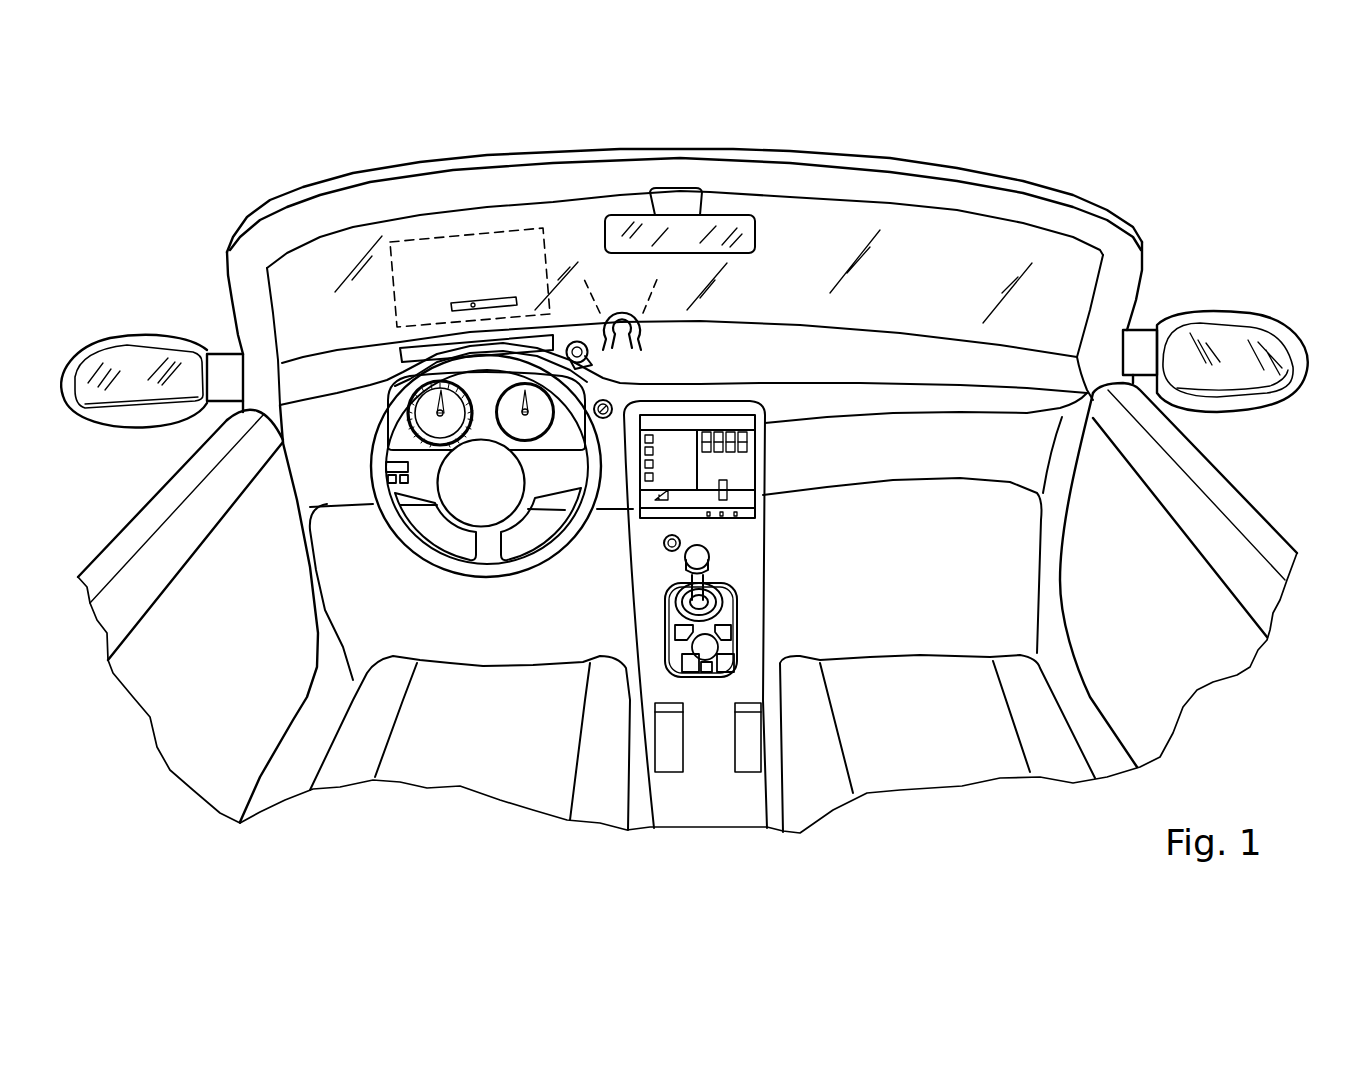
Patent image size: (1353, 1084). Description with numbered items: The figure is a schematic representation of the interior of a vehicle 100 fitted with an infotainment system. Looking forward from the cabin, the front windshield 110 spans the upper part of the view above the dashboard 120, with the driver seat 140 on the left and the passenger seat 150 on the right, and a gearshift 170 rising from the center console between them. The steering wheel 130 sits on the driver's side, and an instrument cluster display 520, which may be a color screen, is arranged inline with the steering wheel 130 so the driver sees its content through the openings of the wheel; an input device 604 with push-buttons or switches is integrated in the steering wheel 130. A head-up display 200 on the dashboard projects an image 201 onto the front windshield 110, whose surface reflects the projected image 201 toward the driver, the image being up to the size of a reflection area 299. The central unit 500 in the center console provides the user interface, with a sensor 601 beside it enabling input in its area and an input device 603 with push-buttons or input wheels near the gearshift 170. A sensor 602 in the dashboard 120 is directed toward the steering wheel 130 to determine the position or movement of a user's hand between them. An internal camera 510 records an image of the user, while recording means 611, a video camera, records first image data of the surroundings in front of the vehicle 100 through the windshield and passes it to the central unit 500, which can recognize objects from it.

The vehicle 100 is at (963, 820).
The front windshield 110 is at (950, 233).
The dashboard 120 is at (370, 392).
The steering wheel 130 is at (490, 567).
The driver seat 140 is at (515, 724).
The passenger seat 150 is at (937, 724).
The gearshift 170 is at (710, 562).
The head-up display 200 is at (397, 358).
The projected image 201 is at (507, 300).
The reflection area 299 is at (443, 233).
The central unit 500 is at (727, 518).
The internal camera 510 is at (578, 342).
The instrument cluster display 520 is at (430, 413).
The sensor 601 is at (660, 548).
The sensor 602 is at (612, 401).
The input device 603 is at (727, 637).
The input device 604 is at (380, 473).
The recording means 611 is at (654, 331).